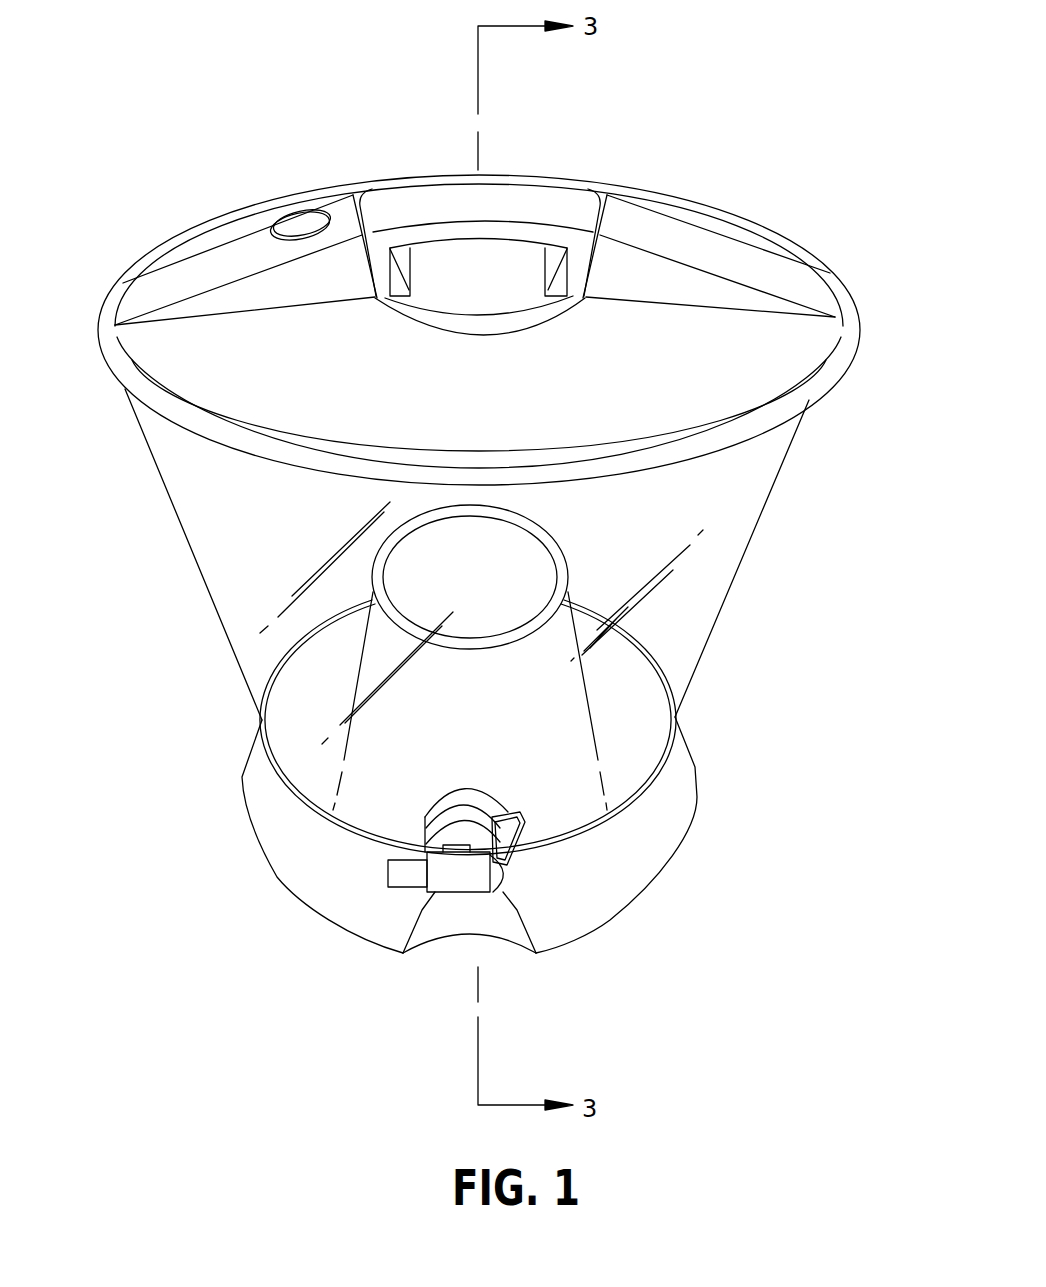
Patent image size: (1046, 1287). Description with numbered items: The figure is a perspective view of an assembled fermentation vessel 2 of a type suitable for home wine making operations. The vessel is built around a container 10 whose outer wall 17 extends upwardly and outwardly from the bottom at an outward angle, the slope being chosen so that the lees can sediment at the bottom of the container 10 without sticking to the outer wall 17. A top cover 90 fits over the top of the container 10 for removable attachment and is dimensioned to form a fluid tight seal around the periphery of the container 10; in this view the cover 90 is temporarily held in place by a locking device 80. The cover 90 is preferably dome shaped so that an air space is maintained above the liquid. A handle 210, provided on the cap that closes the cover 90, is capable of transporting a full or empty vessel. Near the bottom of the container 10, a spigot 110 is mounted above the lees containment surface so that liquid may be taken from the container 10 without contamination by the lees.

The fermentation vessel 2 is at (762, 654).
The container 10 is at (683, 673).
The outer wall 17 is at (738, 573).
The locking device 80 is at (505, 288).
The top cover 90 is at (685, 328).
The spigot 110 is at (455, 877).
The handle 210 is at (513, 200).